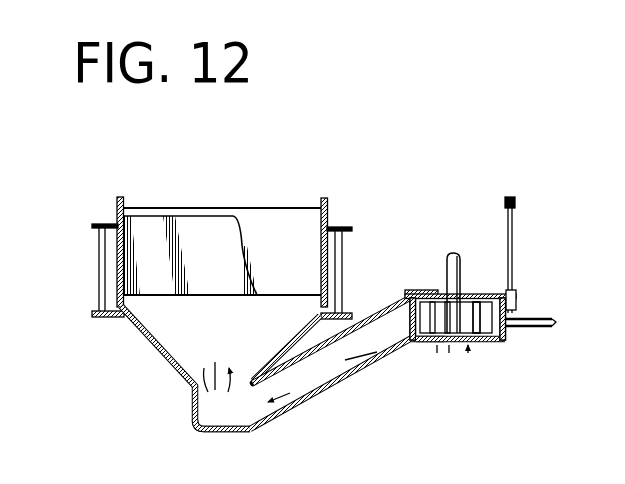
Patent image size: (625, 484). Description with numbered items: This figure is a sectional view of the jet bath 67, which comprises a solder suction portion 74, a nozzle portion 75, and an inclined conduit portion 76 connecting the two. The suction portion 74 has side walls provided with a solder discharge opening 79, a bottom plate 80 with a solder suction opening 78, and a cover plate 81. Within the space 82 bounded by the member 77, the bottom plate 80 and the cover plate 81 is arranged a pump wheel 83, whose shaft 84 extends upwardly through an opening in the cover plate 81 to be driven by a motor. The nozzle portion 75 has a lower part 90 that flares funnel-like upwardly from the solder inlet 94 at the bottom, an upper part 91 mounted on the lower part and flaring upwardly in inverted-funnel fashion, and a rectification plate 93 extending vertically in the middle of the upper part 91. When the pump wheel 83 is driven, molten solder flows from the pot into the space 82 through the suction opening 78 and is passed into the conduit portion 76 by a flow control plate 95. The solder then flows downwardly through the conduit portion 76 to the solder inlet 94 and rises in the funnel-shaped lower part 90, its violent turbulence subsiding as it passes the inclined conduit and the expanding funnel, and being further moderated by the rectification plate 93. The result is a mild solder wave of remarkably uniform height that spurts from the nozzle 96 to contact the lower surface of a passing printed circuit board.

The jet bath 67 is at (360, 207).
The solder suction portion 74 is at (453, 227).
The nozzle portion 75 is at (236, 199).
The conduit portion 76 is at (318, 389).
The member 77 is at (504, 328).
The solder suction opening 78 is at (450, 346).
The solder discharge opening 79 is at (412, 322).
The bottom plate 80 is at (423, 346).
The cover plate 81 is at (478, 294).
The space 82 is at (473, 343).
The pump wheel 83 is at (488, 331).
The shaft 84 is at (462, 258).
The lower part 90 is at (162, 357).
The upper part 91 is at (118, 246).
The rectification plate 93 is at (152, 225).
The solder inlet 94 is at (233, 413).
The flow control plate 95 is at (404, 302).
The nozzle 96 is at (277, 207).